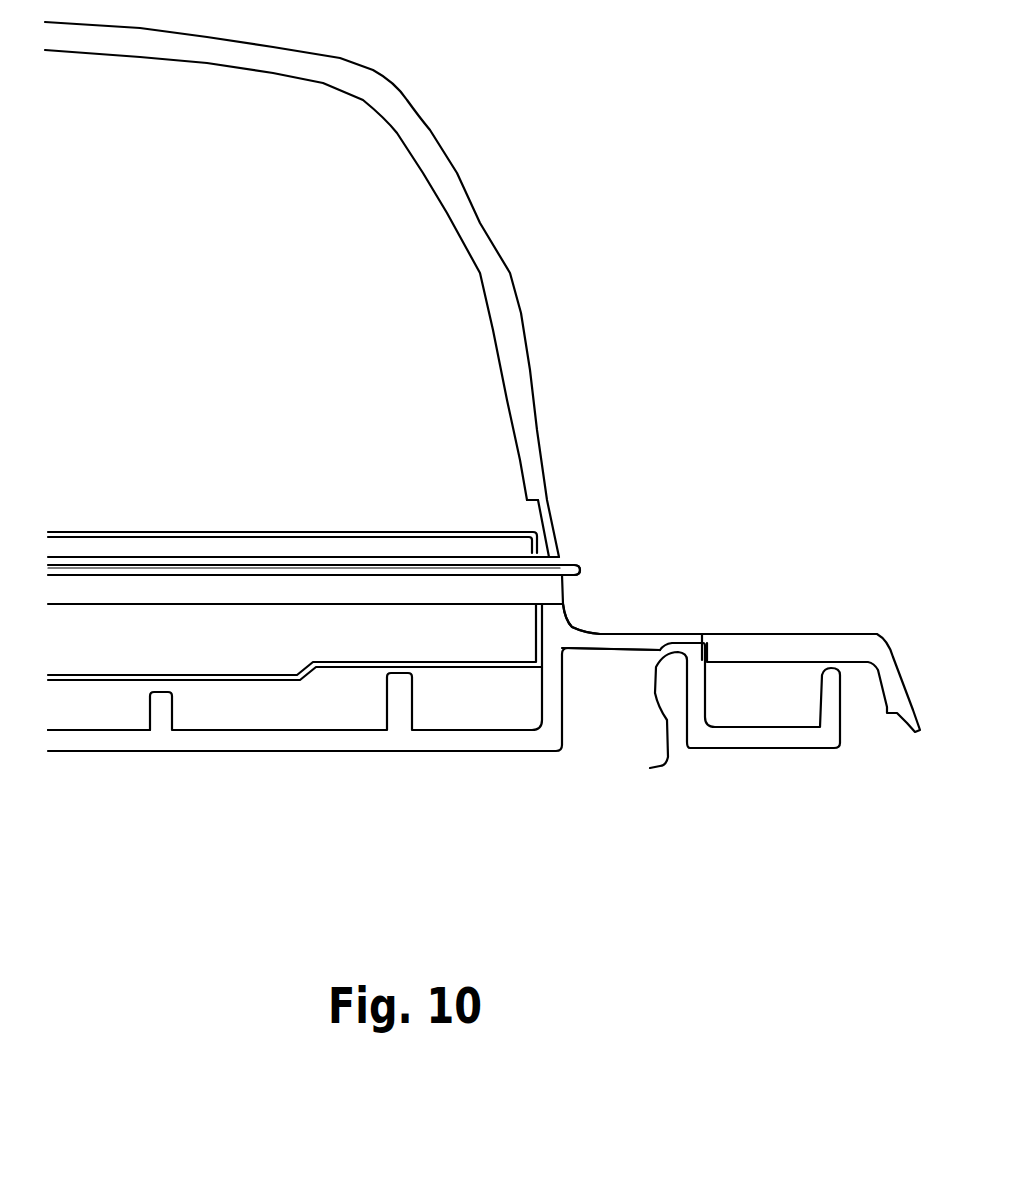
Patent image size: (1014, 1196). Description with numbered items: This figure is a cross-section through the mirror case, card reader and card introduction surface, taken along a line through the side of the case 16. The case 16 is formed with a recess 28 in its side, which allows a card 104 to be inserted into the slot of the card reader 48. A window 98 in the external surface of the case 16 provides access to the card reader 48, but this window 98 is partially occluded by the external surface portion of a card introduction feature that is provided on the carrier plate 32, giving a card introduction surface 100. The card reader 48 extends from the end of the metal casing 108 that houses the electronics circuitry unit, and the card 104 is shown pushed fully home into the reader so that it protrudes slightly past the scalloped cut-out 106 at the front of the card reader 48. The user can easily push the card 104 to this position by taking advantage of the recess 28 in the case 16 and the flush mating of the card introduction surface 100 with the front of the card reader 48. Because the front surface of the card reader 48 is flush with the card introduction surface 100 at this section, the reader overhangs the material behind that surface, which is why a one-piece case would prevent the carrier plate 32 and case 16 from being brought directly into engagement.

The case 16 is at (525, 343).
The recess 28 is at (542, 413).
The carrier plate 32 is at (218, 742).
The card reader 48 is at (317, 590).
The window 98 is at (650, 768).
The card introduction surface 100 is at (657, 630).
The card 104 is at (597, 567).
The scalloped cut-out 106 is at (567, 555).
The metal casing 108 is at (178, 680).